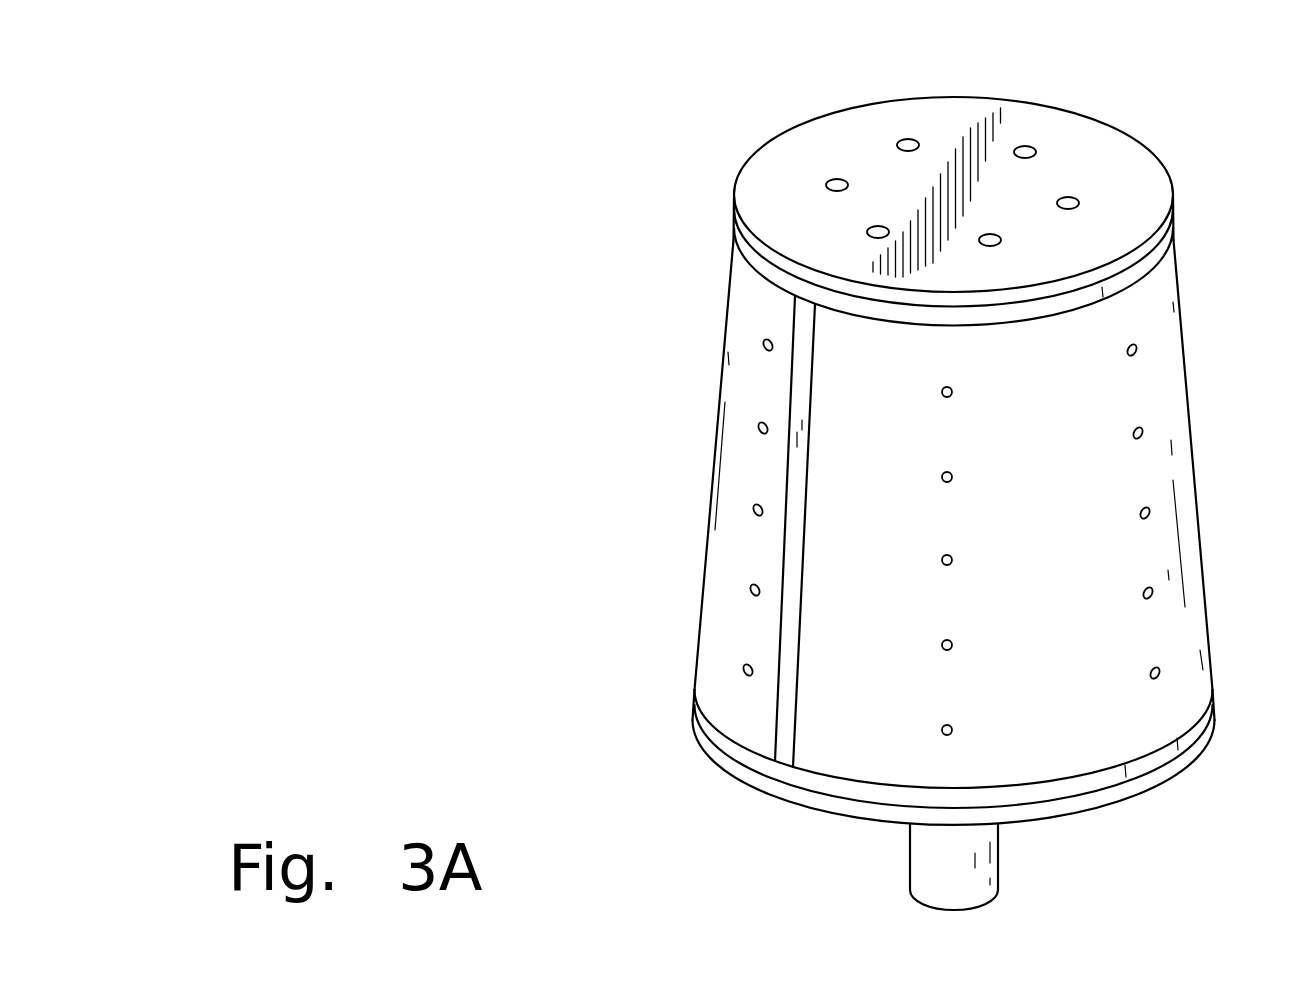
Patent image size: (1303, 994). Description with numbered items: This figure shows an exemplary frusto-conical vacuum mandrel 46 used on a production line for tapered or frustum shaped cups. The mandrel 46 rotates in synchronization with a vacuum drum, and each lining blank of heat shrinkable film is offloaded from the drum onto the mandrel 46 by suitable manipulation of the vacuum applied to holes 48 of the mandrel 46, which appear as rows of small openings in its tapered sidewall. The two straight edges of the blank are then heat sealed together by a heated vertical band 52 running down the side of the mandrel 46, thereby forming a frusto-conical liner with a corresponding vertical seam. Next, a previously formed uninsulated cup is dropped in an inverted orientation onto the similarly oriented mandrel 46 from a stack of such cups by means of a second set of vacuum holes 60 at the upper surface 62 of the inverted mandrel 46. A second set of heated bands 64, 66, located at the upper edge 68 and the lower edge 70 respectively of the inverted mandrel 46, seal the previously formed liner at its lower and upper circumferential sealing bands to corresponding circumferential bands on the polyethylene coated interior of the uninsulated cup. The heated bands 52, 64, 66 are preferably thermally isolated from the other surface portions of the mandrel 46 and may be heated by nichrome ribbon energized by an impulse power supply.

The vacuum mandrel 46 is at (1216, 93).
The holes 48 is at (1143, 430).
The heated vertical band 52 is at (784, 718).
The second set of vacuum holes 60 is at (908, 138).
The upper surface 62 is at (812, 138).
The heated band 64 is at (734, 242).
The heated band 66 is at (717, 730).
The upper edge 68 is at (1163, 157).
The lower edge 70 is at (808, 808).